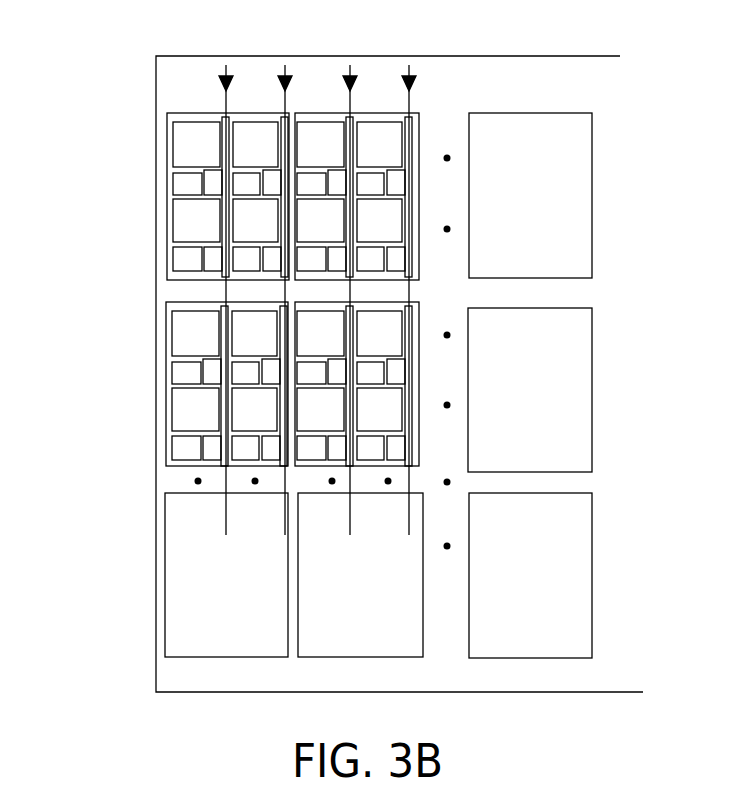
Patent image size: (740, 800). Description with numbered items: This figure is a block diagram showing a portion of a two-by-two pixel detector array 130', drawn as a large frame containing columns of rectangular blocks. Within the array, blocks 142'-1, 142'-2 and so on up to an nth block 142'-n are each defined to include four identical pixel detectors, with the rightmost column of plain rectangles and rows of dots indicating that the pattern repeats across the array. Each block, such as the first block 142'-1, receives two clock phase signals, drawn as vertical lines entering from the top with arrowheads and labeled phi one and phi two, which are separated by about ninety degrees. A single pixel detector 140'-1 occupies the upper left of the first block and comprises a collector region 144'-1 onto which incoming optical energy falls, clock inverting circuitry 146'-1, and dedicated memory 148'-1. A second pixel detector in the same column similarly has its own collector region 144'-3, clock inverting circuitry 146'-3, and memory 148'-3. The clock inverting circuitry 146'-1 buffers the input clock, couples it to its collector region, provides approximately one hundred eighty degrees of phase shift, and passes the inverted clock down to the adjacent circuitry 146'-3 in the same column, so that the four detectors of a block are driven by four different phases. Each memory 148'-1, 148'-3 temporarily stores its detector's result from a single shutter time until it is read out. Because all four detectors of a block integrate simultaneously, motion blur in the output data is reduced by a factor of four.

The pixel detector array 130' is at (399, 355).
The pixel detector 140'-1 is at (167, 149).
The block 142'-1 is at (222, 339).
The block 142'-2 is at (372, 339).
The block 142'-n is at (574, 385).
The collector region 144'-1 is at (124, 144).
The collector region 144'-3 is at (124, 220).
The clock inverting circuitry 146'-1 is at (128, 183).
The clock inverting circuitry 146'-3 is at (125, 281).
The dedicated memory 148'-1 is at (115, 180).
The dedicated memory 148'-3 is at (115, 262).